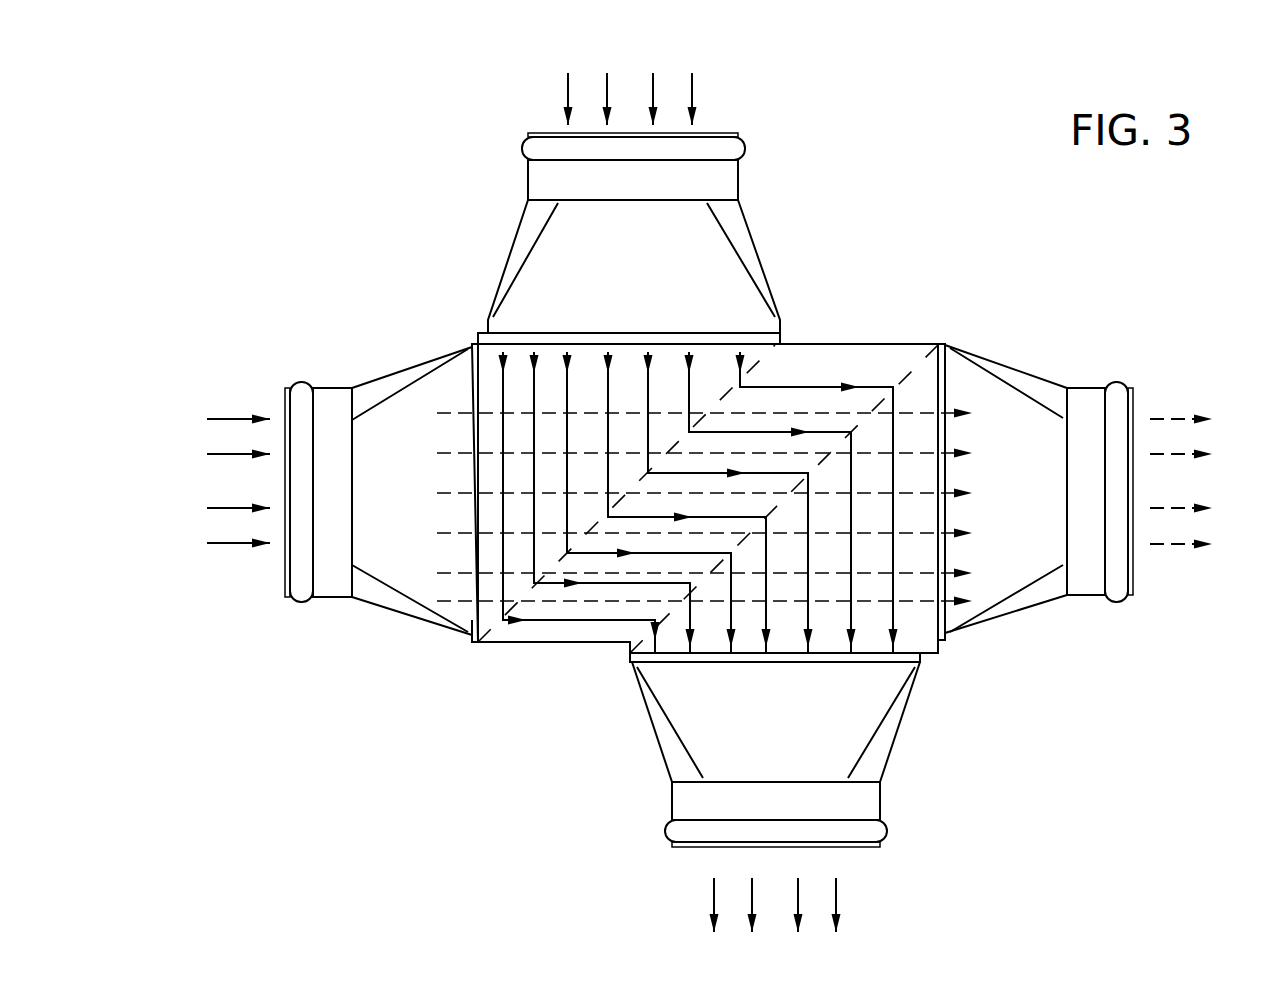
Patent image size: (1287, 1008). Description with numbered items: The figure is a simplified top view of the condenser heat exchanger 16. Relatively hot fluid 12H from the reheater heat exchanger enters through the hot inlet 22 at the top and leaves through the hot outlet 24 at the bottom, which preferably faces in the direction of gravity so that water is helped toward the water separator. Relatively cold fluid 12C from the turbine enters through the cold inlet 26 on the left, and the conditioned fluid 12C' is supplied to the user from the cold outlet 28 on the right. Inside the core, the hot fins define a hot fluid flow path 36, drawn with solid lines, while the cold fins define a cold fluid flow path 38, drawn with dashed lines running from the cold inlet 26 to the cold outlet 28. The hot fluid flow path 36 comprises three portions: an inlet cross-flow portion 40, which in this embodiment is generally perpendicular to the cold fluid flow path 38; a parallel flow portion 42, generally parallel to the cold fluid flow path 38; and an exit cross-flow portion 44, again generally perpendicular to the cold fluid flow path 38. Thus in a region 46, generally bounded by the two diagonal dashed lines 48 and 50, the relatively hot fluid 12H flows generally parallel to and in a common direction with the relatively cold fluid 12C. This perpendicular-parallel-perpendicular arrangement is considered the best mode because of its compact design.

The relatively hot fluid 12H is at (692, 93).
The relatively cold fluid 12C is at (252, 439).
The conditioned fluid 12C' is at (1201, 442).
The condenser heat exchanger 16 is at (1012, 306).
The hot inlet 22 is at (537, 187).
The hot outlet 24 is at (870, 795).
The cold inlet 26 is at (335, 582).
The cold outlet 28 is at (1090, 397).
The hot fluid flow path 36 is at (906, 592).
The cold fluid flow path 38 is at (448, 413).
The inlet cross-flow portion 40 is at (750, 372).
The parallel flow portion 42 is at (858, 385).
The exit cross-flow portion 44 is at (895, 617).
The region 46 is at (595, 635).
The dashed line 48 is at (488, 632).
The dashed line 50 is at (637, 687).